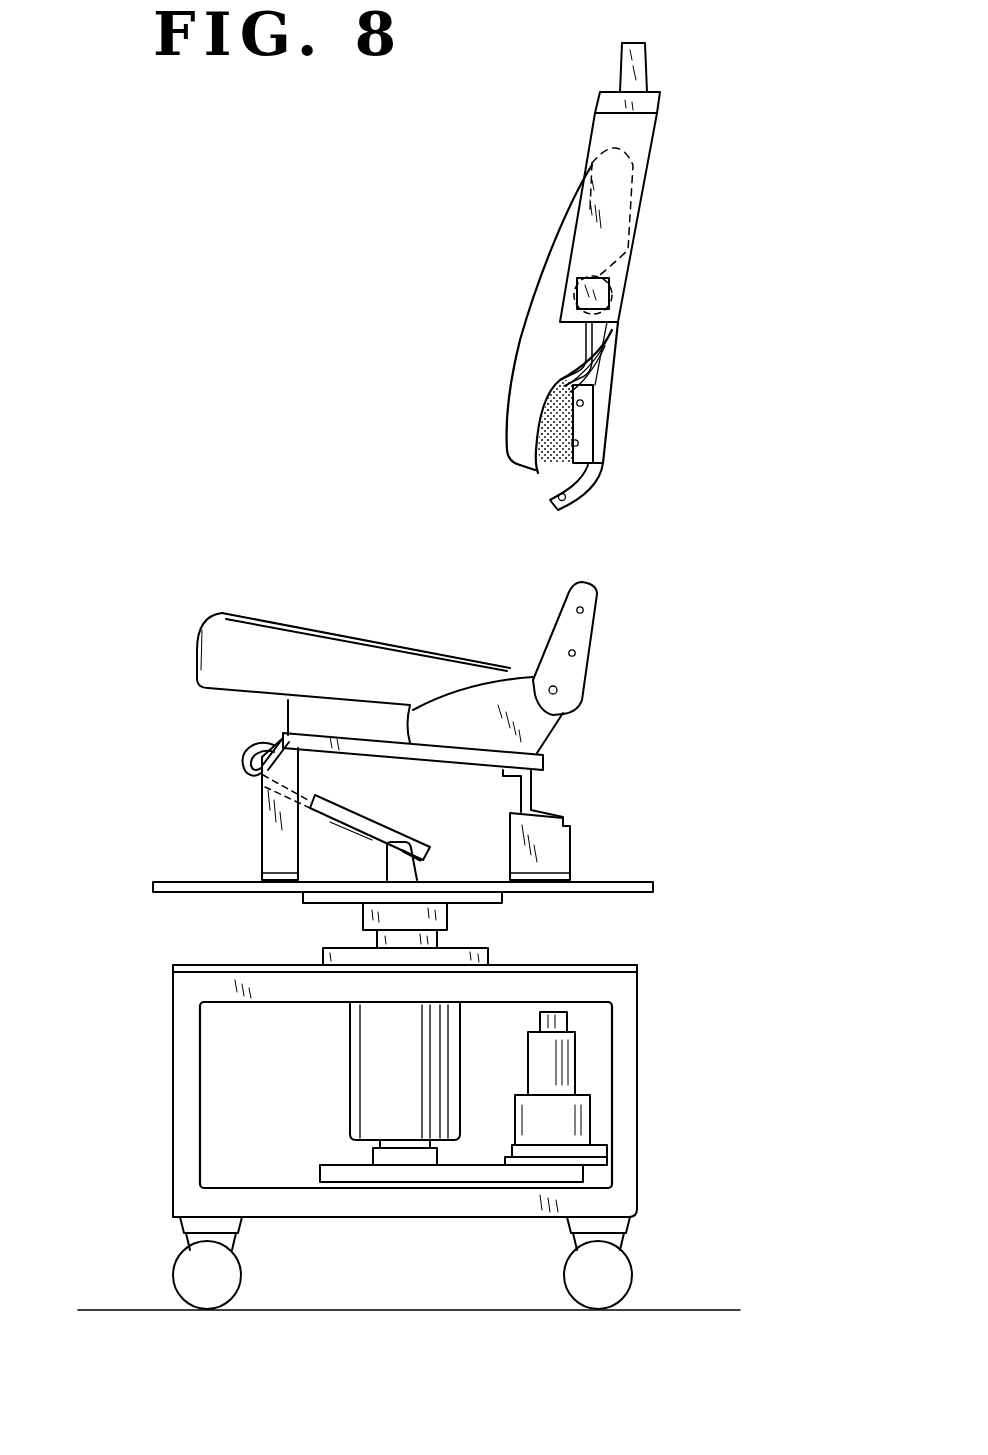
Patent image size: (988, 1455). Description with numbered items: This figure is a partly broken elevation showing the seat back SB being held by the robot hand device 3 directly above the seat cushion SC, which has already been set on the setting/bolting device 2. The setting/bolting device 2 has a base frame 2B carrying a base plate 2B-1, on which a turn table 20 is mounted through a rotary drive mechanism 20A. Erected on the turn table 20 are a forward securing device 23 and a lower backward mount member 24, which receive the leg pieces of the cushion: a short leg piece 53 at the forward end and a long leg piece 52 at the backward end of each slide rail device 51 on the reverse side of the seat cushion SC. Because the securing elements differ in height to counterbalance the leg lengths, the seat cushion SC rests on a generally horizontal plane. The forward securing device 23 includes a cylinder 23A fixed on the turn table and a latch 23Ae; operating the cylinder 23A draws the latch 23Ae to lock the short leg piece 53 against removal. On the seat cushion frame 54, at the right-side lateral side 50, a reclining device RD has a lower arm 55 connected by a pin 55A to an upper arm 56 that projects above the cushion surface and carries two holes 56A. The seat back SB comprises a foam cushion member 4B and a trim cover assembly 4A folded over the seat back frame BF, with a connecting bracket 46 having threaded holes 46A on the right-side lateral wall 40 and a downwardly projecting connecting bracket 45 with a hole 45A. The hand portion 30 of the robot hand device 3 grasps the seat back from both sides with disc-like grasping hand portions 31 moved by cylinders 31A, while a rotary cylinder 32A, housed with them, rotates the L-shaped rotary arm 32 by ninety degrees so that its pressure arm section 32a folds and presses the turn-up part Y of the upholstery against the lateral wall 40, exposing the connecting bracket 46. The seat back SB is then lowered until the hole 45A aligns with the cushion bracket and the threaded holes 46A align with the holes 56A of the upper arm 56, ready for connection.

The setting/bolting device 2 is at (138, 999).
The base frame 2B is at (173, 1080).
The base plate 2B-1 is at (213, 963).
The robot hand device 3 is at (620, 66).
The trim cover assembly 4A is at (510, 397).
The foam cushion member 4B is at (541, 475).
The turn table 20 is at (198, 880).
The rotary drive mechanism 20A is at (367, 1063).
The forward securing device 23 is at (268, 813).
The cylinder 23A is at (340, 803).
The latch 23Ae is at (245, 758).
The backward mount member 24 is at (560, 843).
The hand portion 30 is at (640, 138).
The grasping hand portion 31 is at (640, 252).
The cylinder 31A is at (616, 295).
The rotary arm 32 is at (585, 343).
The rotary cylinder 32A is at (593, 293).
The pressure arm section 32a is at (557, 387).
The right-side lateral wall 40 is at (547, 278).
The downwardly projecting connecting bracket 45 is at (577, 490).
The hole 45A is at (560, 502).
The connecting bracket 46 is at (580, 425).
The threaded holes 46A is at (584, 404).
The right-side lateral side 50 is at (230, 650).
The slide rail device 51 is at (433, 758).
The long leg piece 52 is at (532, 792).
The short leg piece 53 is at (267, 737).
The seat cushion frame 54 is at (298, 713).
The lower arm 55 is at (540, 732).
The pin 55A is at (557, 691).
The upper arm 56 is at (567, 627).
The holes 56A is at (583, 610).
The seat back SB is at (553, 224).
The seat cushion SC is at (296, 620).
The reclining device RD is at (603, 677).
The seat back frame BF is at (604, 371).
The turn-up part Y is at (533, 410).